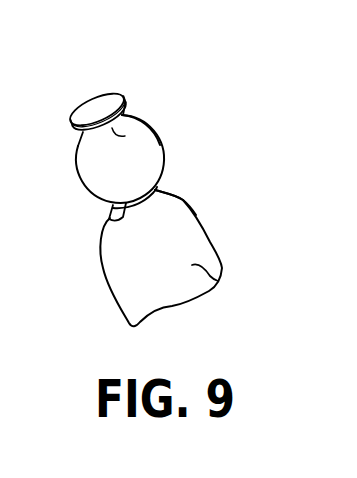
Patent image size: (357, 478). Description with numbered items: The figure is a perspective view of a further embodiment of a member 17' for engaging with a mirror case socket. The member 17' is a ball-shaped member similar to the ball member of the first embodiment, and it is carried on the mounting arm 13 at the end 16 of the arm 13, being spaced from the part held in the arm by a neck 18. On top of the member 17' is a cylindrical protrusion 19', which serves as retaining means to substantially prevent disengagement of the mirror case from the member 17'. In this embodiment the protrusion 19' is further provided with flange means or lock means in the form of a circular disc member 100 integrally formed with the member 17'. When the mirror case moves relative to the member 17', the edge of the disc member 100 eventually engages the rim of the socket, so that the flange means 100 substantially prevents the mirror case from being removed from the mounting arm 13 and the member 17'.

The circular disc member 100 is at (100, 118).
The protrusion 19' is at (166, 105).
The member 17' is at (153, 159).
The neck 18 is at (110, 214).
The end of the arm 16 is at (193, 204).
The arm 13 is at (218, 282).